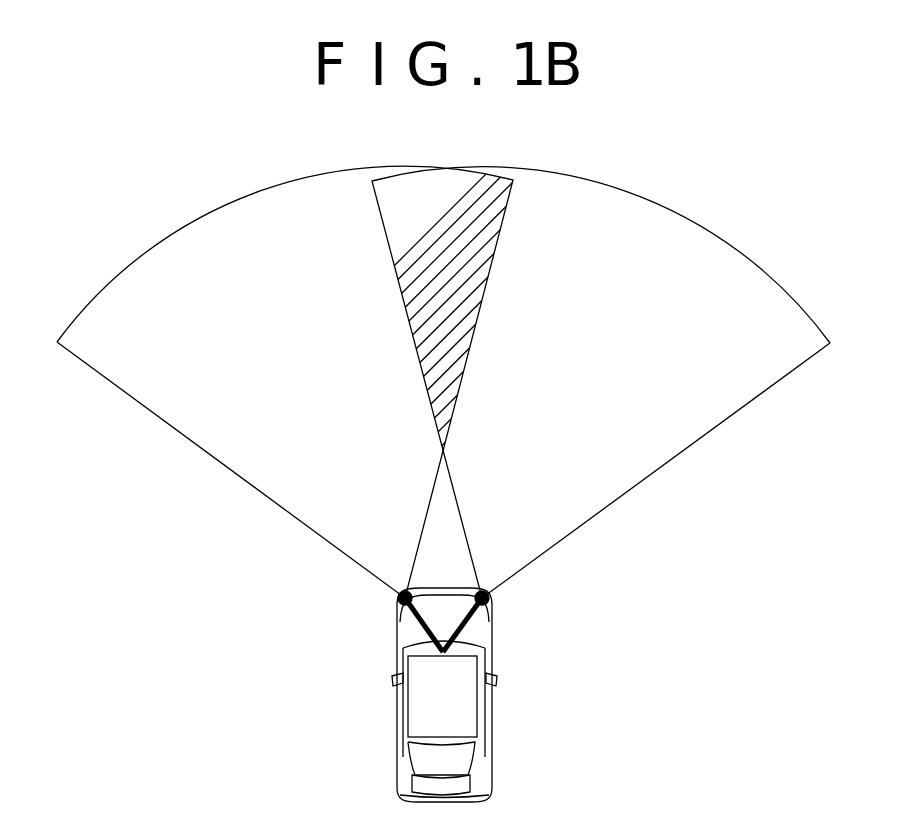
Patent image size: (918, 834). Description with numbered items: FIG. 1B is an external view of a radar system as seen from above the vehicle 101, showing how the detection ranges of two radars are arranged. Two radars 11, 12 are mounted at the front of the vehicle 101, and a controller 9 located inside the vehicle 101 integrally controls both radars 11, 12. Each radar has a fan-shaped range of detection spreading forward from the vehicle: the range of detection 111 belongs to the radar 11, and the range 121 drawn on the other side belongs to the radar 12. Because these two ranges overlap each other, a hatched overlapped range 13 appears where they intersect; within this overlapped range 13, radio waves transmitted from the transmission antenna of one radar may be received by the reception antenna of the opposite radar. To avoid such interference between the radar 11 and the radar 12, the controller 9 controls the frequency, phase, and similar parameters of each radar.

The controller 9 is at (478, 730).
The radar 11 is at (488, 600).
The radar 12 is at (400, 603).
The overlapped range 13 is at (515, 200).
The vehicle 101 is at (478, 637).
The range of detection 111 is at (535, 503).
The detection range of first sensor 121 is at (337, 518).